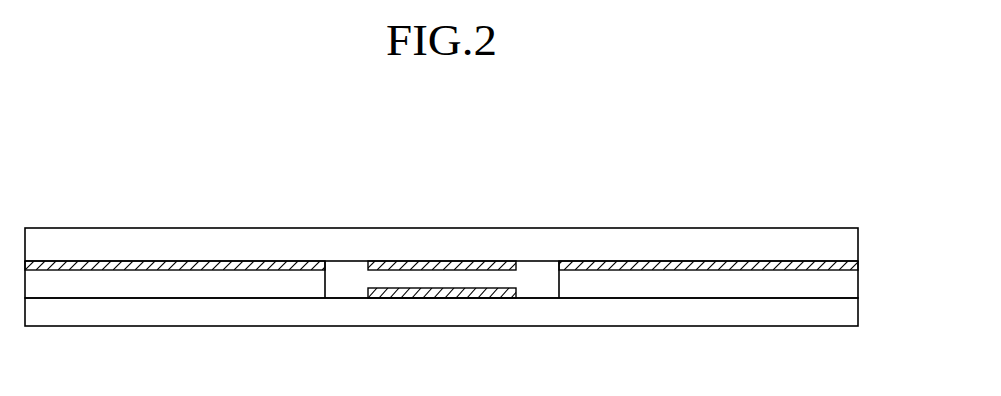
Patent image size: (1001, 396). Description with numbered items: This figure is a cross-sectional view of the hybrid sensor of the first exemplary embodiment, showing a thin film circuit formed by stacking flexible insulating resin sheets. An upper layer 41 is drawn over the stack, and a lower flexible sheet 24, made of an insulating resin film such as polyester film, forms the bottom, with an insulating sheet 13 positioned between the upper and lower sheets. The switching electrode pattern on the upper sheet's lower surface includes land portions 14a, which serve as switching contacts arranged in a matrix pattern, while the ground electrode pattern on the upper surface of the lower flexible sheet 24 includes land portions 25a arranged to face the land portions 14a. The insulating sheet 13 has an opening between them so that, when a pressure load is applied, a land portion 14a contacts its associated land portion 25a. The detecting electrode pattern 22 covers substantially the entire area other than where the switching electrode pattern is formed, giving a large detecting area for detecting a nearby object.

The upper substrate 41 is at (843, 241).
The insulating sheet 13 is at (841, 281).
The lower flexible sheet 24 is at (843, 309).
The detecting electrode pattern 22 is at (190, 261).
The land portions 14a is at (448, 262).
The land portions 25a is at (445, 298).